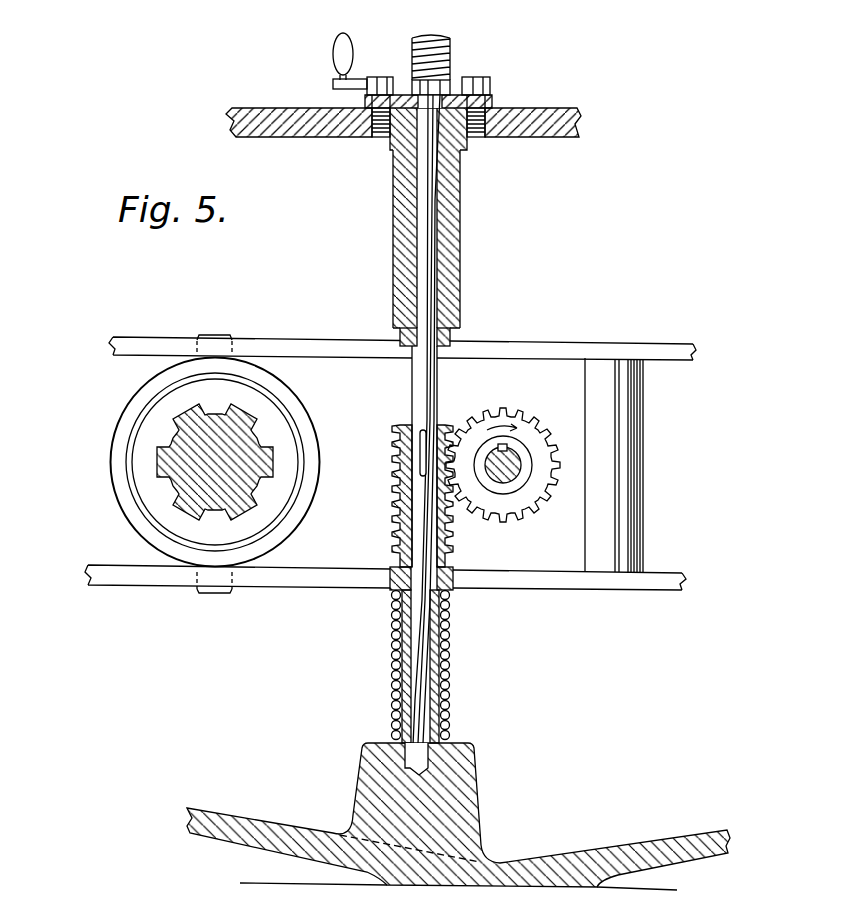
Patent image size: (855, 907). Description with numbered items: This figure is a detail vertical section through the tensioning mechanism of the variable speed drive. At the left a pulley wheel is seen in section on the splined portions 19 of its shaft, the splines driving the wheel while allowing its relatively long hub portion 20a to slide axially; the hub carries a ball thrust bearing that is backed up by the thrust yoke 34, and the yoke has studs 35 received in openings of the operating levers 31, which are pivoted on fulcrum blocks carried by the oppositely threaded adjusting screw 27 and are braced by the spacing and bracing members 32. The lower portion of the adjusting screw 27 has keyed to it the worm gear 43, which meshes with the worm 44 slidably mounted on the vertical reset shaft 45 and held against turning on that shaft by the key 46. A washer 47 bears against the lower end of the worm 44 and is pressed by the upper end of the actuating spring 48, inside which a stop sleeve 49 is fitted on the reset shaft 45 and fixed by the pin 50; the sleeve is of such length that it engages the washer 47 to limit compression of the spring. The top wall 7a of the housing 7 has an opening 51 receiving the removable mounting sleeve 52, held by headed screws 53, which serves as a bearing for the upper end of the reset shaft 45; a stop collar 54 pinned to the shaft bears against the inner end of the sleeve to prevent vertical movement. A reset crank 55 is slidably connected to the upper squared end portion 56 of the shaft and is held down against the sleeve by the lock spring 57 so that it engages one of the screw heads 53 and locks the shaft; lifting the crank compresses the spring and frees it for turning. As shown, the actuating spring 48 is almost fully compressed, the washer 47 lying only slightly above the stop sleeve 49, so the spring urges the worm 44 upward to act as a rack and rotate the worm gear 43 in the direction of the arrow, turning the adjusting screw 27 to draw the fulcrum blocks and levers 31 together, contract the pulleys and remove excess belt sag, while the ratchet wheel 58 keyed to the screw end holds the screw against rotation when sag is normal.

The housing 7 is at (567, 884).
The top wall 7a is at (548, 108).
The splined portions 19 is at (190, 434).
The hub portion 20a is at (282, 497).
The adjusting screw 27 is at (520, 478).
The operating levers 31 is at (558, 342).
The spacing and bracing members 32 is at (640, 533).
The thrust yoke 34 is at (318, 436).
The studs 35 is at (213, 334).
The worm gear 43 is at (532, 413).
The worm 44 is at (396, 446).
The reset shaft 45 is at (412, 391).
The key 46 is at (421, 435).
The washer 47 is at (452, 590).
The actuating spring 48 is at (446, 651).
The stop sleeve 49 is at (396, 680).
The pin 50 is at (405, 757).
The opening 51 is at (467, 147).
The mounting sleeve 52 is at (459, 256).
The headed screws 53 is at (377, 77).
The stop collar 54 is at (452, 339).
The reset crank 55 is at (333, 84).
The squared end portion 56 is at (393, 140).
The lock spring 57 is at (436, 55).
The ratchet wheel 58 is at (498, 418).